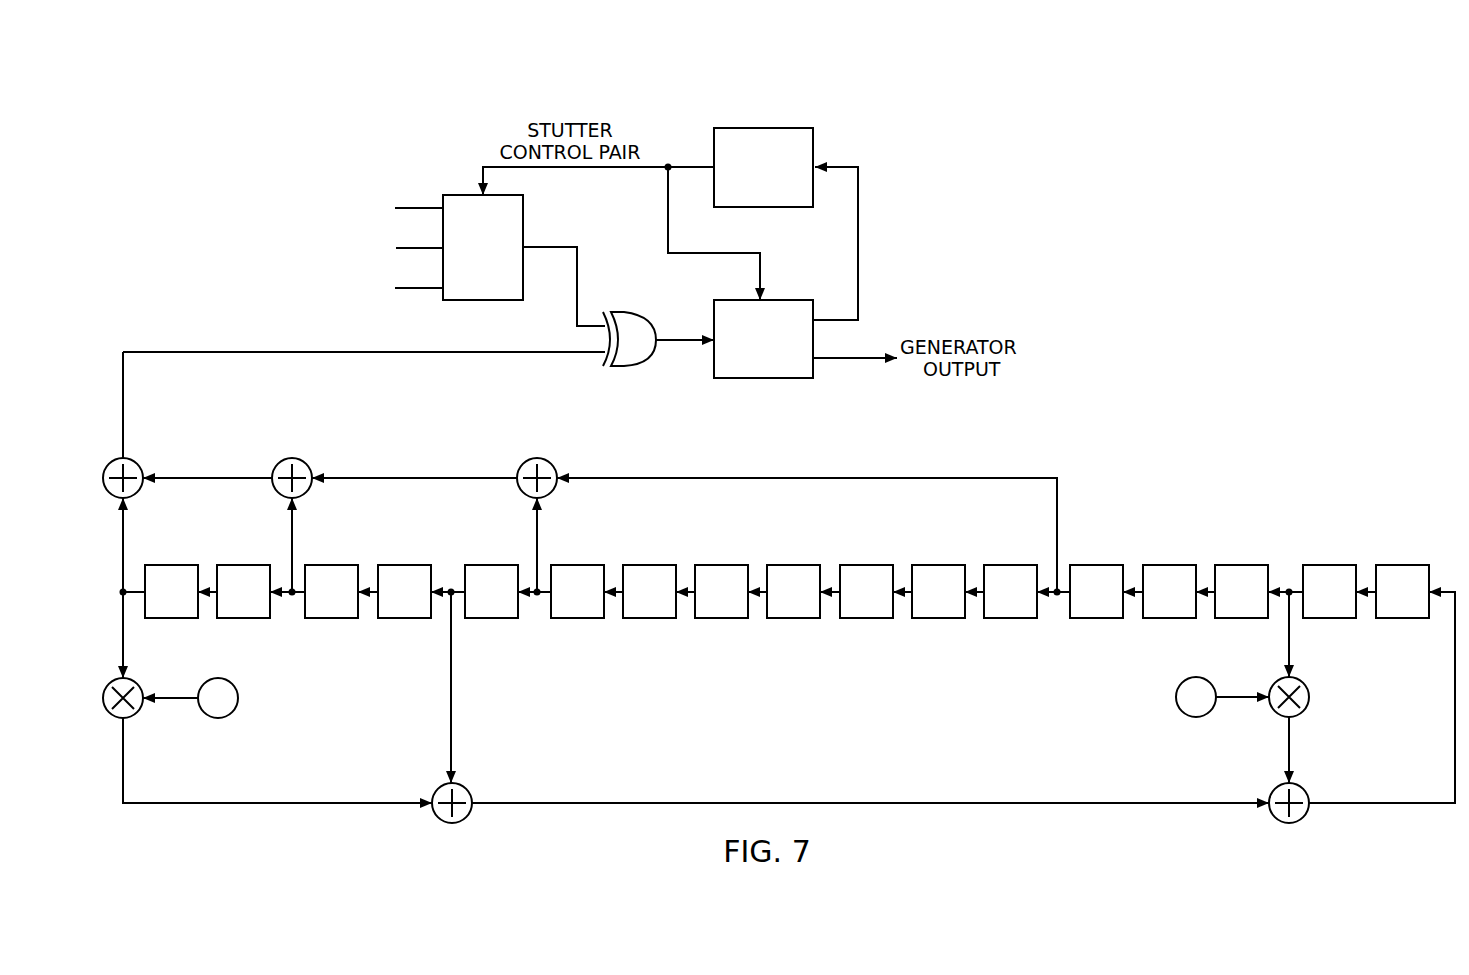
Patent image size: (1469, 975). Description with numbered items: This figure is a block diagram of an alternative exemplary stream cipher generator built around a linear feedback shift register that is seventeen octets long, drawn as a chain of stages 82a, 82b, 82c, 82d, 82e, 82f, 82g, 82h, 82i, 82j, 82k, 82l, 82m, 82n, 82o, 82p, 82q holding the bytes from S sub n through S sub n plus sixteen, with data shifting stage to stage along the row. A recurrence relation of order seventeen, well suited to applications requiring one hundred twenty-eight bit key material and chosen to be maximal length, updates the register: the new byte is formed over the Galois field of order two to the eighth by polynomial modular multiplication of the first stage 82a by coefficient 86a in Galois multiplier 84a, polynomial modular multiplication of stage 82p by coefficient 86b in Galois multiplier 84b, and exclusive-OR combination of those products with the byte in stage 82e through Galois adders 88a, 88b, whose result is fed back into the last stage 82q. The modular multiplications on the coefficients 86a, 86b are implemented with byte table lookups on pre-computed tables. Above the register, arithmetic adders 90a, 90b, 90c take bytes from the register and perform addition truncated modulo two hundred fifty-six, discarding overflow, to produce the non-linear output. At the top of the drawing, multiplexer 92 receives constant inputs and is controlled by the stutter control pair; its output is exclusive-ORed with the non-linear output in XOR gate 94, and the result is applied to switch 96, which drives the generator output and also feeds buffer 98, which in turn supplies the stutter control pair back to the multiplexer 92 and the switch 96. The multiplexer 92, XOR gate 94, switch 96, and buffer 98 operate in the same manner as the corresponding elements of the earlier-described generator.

The linear feedback shift register stage 82a is at (153, 566).
The linear feedback shift register stage 82b is at (225, 566).
The linear feedback shift register stage 82c is at (313, 566).
The linear feedback shift register stage 82d is at (386, 566).
The linear feedback shift register stage 82e is at (473, 566).
The linear feedback shift register stage 82f is at (559, 566).
The linear feedback shift register stage 82g is at (631, 566).
The linear feedback shift register stage 82h is at (703, 566).
The linear feedback shift register stage 82i is at (775, 566).
The linear feedback shift register stage 82j is at (848, 566).
The linear feedback shift register stage 82k is at (920, 566).
The linear feedback shift register stage 82l is at (992, 566).
The linear feedback shift register stage 82m is at (1078, 566).
The linear feedback shift register stage 82n is at (1151, 566).
The linear feedback shift register stage 82o is at (1223, 566).
The linear feedback shift register stage 82p is at (1311, 566).
The linear feedback shift register stage 82q is at (1384, 566).
The Galois multiplier 84a is at (137, 684).
The Galois multiplier 84b is at (1303, 683).
The coefficient 86a is at (232, 684).
The coefficient 86b is at (1210, 683).
The Galois adder 88a is at (466, 789).
The Galois adder 88b is at (1303, 789).
The arithmetic adder 90a is at (137, 464).
The arithmetic adder 90b is at (306, 464).
The arithmetic adder 90c is at (551, 464).
The multiplexer 92 is at (462, 195).
The XOR gate 94 is at (640, 320).
The switch 96 is at (785, 301).
The buffer 98 is at (736, 129).